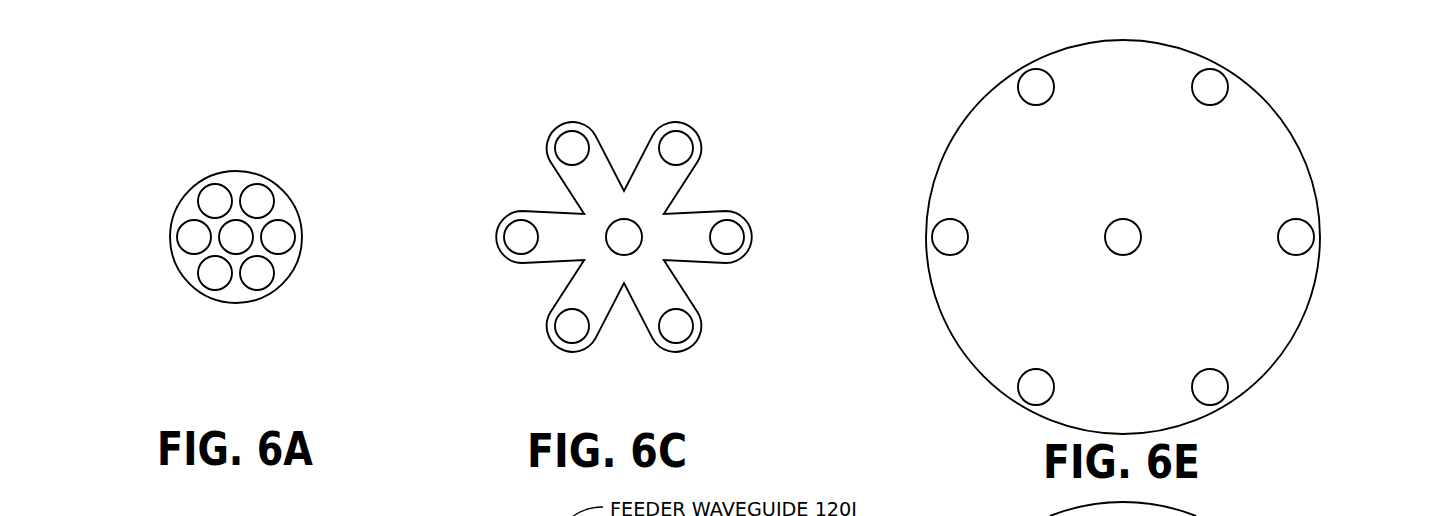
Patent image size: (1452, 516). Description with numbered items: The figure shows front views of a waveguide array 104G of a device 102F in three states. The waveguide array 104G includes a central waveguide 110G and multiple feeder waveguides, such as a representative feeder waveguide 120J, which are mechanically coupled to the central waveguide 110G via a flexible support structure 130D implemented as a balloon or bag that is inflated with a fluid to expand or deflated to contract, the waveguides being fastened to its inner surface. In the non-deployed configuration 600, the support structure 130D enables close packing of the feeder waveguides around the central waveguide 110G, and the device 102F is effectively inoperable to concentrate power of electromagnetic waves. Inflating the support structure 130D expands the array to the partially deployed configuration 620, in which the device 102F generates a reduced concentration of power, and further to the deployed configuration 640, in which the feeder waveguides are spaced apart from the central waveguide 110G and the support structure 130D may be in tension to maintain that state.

In FIG. 6A, the non-deployed configuration 600 is at (252, 328).
In FIG. 6A, the device 102F is at (332, 249).
In FIG. 6A, the waveguide array 104G is at (206, 116).
In FIG. 6C, the waveguide array 104G is at (515, 352).
In FIG. 6E, the waveguide array 104G is at (1287, 95).
In FIG. 6A, the feeder waveguide 120J is at (215, 183).
In FIG. 6C, the feeder waveguide 120J is at (587, 140).
In FIG. 6E, the feeder waveguide 120J is at (1020, 84).
In FIG. 6A, the central waveguide 110G is at (236, 220).
In FIG. 6C, the central waveguide 110G is at (642, 232).
In FIG. 6E, the central waveguide 110G is at (1113, 221).
In FIG. 6C, the partially deployed configuration 620 is at (538, 98).
In FIG. 6C, the support structure 130D is at (695, 262).
In FIG. 6E, the support structure 130D is at (976, 370).
In FIG. 6E, the deployed configuration 640 is at (1242, 437).